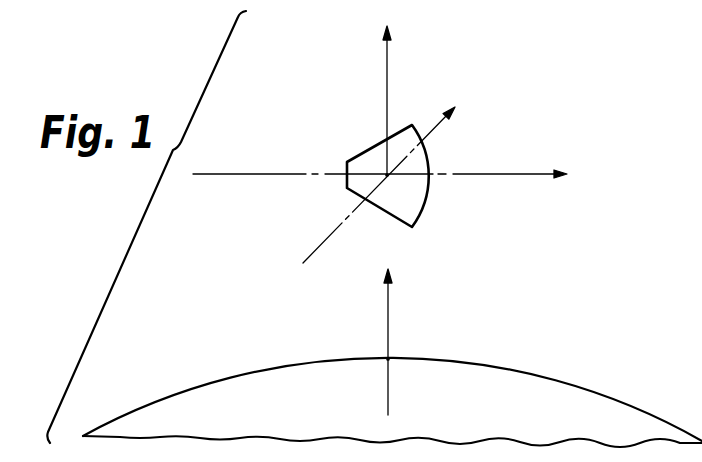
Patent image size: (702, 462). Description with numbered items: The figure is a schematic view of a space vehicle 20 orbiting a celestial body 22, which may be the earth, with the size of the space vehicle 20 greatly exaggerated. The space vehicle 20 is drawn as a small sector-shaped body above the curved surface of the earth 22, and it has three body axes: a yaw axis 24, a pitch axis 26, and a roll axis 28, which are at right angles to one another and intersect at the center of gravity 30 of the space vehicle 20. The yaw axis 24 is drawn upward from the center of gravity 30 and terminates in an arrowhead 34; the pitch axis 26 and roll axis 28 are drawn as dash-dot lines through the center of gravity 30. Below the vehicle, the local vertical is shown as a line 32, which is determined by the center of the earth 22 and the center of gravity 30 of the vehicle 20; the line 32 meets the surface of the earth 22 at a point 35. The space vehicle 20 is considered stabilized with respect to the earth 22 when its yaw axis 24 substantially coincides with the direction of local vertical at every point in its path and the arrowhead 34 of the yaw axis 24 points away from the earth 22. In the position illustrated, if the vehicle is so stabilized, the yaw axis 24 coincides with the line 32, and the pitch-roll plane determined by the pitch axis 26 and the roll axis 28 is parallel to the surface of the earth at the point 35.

The space vehicle 20 is at (412, 125).
The celestial body 22 is at (590, 392).
The yaw axis 24 is at (387, 77).
The pitch axis 26 is at (318, 243).
The roll axis 28 is at (523, 177).
The center of gravity 30 is at (387, 175).
The local vertical line 32 is at (387, 399).
The arrowhead of yaw axis 34 is at (386, 31).
The point on earth surface 35 is at (388, 359).